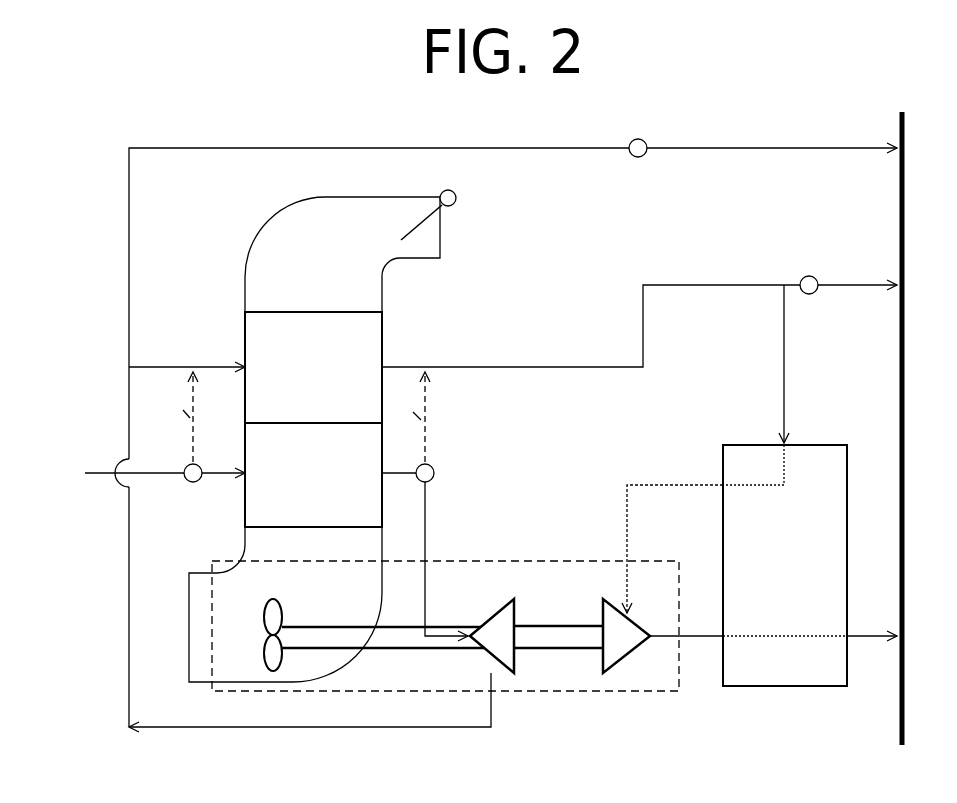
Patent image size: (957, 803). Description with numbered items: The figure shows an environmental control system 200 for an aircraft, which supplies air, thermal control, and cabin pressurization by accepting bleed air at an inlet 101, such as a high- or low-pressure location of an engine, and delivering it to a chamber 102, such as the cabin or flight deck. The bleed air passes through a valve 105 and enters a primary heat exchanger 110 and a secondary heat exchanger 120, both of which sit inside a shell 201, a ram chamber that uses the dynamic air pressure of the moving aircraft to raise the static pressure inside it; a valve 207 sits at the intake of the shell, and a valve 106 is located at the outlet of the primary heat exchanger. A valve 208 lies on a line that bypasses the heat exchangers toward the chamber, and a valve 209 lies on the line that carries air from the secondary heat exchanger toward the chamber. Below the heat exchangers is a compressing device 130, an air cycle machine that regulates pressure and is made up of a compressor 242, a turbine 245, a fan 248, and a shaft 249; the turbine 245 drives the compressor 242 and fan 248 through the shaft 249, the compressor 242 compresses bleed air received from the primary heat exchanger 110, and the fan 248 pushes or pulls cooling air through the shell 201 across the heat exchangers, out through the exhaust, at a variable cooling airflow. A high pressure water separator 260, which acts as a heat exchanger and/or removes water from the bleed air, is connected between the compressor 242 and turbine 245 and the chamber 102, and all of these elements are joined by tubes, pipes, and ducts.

The environmental control system 200 is at (173, 112).
The chamber 102 is at (903, 404).
The inlet 101 is at (142, 473).
The valve 105 is at (186, 467).
The valve 106 is at (432, 466).
The primary heat exchanger 110 is at (313, 475).
The secondary heat exchanger 120 is at (313, 367).
The compressing device 130 is at (212, 561).
The shell 201 is at (243, 298).
The valve 207 is at (457, 193).
The valve 208 is at (644, 155).
The valve 209 is at (815, 292).
The compressor 242 is at (492, 636).
The turbine 245 is at (626, 636).
The fan 248 is at (298, 590).
The shaft 249 is at (395, 650).
The high pressure water separator 260 is at (785, 565).